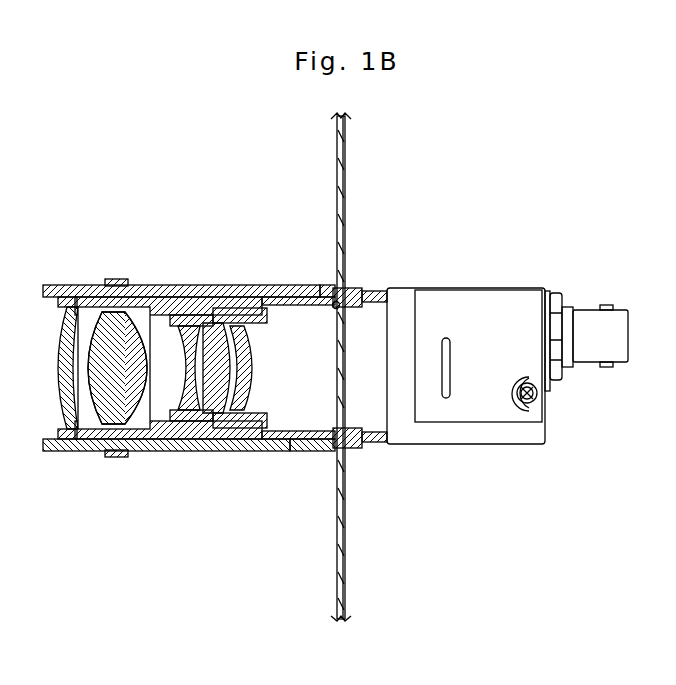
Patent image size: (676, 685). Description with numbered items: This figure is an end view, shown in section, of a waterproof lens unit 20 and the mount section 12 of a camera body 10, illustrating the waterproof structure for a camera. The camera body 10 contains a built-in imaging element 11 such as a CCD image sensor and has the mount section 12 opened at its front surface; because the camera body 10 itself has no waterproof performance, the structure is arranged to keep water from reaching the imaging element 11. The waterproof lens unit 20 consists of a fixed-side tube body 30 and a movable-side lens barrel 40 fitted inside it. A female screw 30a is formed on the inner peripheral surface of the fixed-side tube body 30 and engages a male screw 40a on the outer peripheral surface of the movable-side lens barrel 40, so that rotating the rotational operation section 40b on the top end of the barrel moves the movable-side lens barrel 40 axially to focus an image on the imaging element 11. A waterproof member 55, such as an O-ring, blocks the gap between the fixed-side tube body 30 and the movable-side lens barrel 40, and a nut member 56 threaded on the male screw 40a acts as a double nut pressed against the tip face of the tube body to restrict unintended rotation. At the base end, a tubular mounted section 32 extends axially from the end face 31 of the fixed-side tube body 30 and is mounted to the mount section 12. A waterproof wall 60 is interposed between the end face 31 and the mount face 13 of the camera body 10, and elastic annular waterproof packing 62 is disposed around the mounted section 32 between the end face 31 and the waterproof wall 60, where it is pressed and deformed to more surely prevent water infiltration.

The camera body 10 is at (493, 274).
The imaging element 11 is at (455, 367).
The mount section 12 is at (371, 289).
The mount face 13 is at (332, 306).
The waterproof lens unit 20 is at (252, 268).
The fixed-side tube body 30 is at (155, 285).
The female screw 30a is at (299, 431).
The end face 31 is at (347, 284).
The mounted section 32 is at (345, 308).
The movable-side lens barrel 40 is at (182, 451).
The male screw 40a is at (204, 451).
The rotational operation section 40b is at (91, 451).
The waterproof member 55 is at (225, 285).
The nut member 56 is at (117, 279).
The waterproof wall 60 is at (347, 143).
The waterproof packing 62 is at (344, 428).